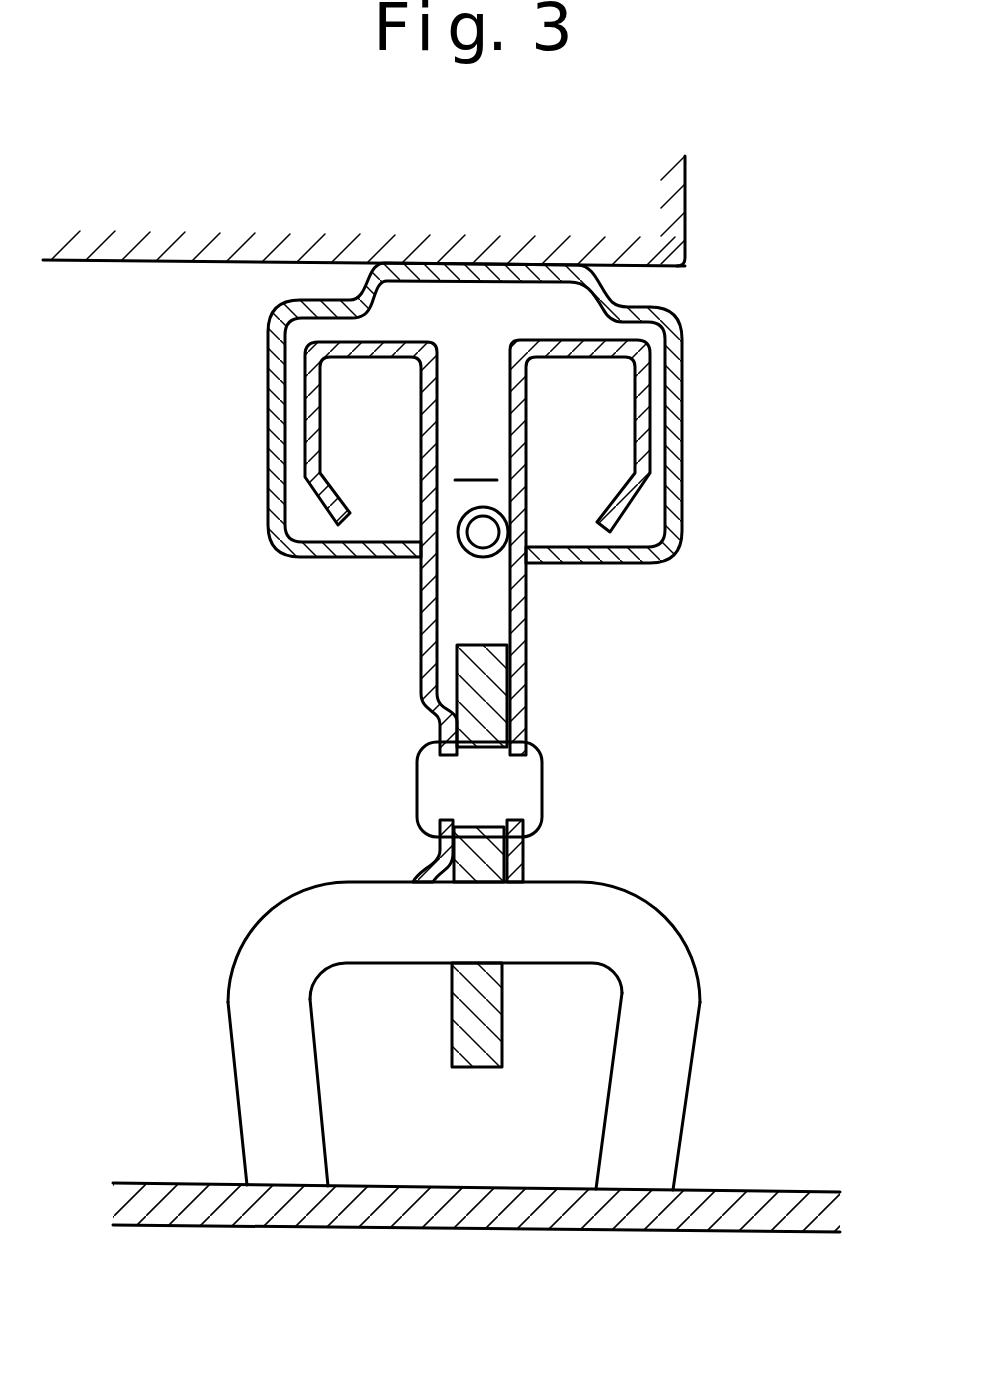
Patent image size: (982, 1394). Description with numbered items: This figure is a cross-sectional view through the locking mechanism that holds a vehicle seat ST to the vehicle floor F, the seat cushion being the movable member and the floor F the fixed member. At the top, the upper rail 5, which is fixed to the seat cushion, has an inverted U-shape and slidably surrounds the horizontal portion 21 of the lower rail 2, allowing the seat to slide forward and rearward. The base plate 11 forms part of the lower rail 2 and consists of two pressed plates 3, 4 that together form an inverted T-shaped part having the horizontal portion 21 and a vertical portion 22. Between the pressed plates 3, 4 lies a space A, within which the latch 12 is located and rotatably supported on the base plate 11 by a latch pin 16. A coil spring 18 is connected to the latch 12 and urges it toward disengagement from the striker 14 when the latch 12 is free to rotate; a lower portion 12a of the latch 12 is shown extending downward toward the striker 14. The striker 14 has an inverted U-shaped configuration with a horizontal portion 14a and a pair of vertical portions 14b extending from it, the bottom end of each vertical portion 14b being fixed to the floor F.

The vehicle seat ST is at (326, 214).
The upper rail 5 is at (557, 266).
The horizontal portion 21 is at (443, 312).
The base plate 11 is at (464, 611).
The lower rail 2 is at (464, 611).
The pressed plate 3 is at (432, 598).
The pressed plate 4 is at (522, 602).
The vertical portion 22 is at (545, 682).
The latch 12 is at (559, 856).
The lower end of shaft member 12a is at (477, 967).
The latch pin 16 is at (522, 790).
The coil spring 18 is at (485, 508).
The space A is at (476, 457).
The striker 14 is at (476, 1005).
The horizontal portion 14a is at (575, 905).
The vertical portions 14b is at (258, 1090).
The floor F is at (737, 1210).